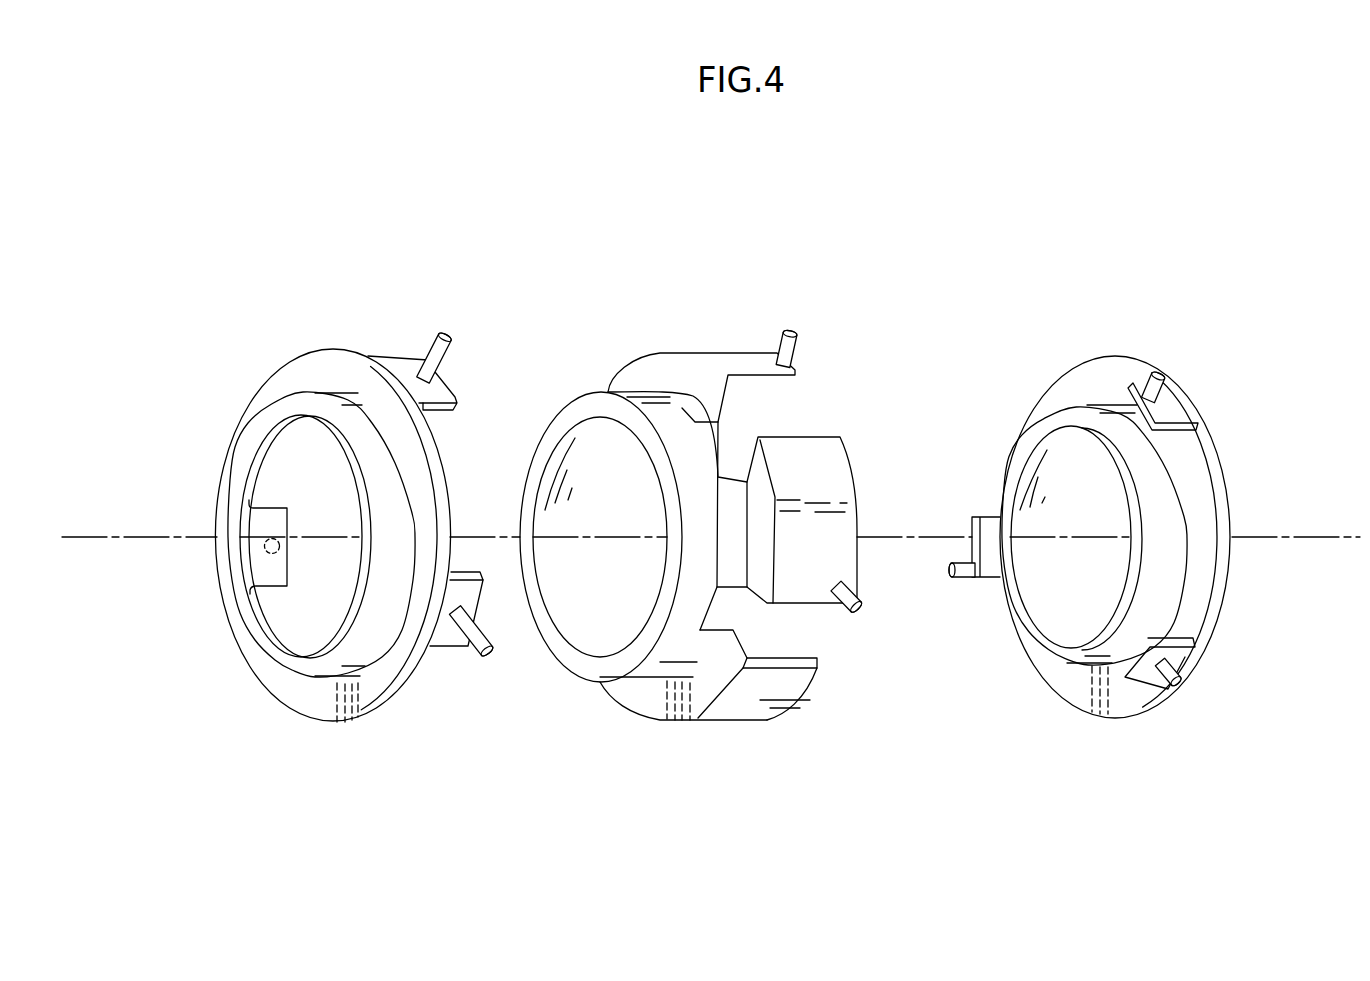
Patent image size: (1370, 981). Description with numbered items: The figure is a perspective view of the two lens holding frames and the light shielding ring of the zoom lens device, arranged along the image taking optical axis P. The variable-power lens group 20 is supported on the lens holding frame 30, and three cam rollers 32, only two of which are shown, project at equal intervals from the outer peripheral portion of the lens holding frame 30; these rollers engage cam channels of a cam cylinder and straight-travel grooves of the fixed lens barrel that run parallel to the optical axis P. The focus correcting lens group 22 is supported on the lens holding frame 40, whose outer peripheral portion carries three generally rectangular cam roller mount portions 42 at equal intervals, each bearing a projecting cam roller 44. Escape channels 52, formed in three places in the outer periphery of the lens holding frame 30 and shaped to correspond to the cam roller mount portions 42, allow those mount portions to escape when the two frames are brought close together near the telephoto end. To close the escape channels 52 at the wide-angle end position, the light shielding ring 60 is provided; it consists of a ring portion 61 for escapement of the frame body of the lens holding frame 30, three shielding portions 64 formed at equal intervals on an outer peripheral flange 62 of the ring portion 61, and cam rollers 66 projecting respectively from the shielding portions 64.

The image taking optical axis P is at (97, 537).
The variable-power lens group 20 is at (583, 617).
The focus correcting lens group 22 is at (1047, 467).
The lens holding frame 30 is at (653, 353).
The cam rollers 32 is at (797, 348).
The lens holding frame 40 is at (1180, 368).
The cam roller mount portions 42 is at (1172, 412).
The cam rollers 44 is at (1147, 380).
The escape channels 52 is at (793, 437).
The light shielding ring 60 is at (305, 354).
The ring portion 61 is at (280, 663).
The outer peripheral flange 62 is at (420, 480).
The shielding portions 64 is at (403, 365).
The cam rollers 66 is at (448, 355).